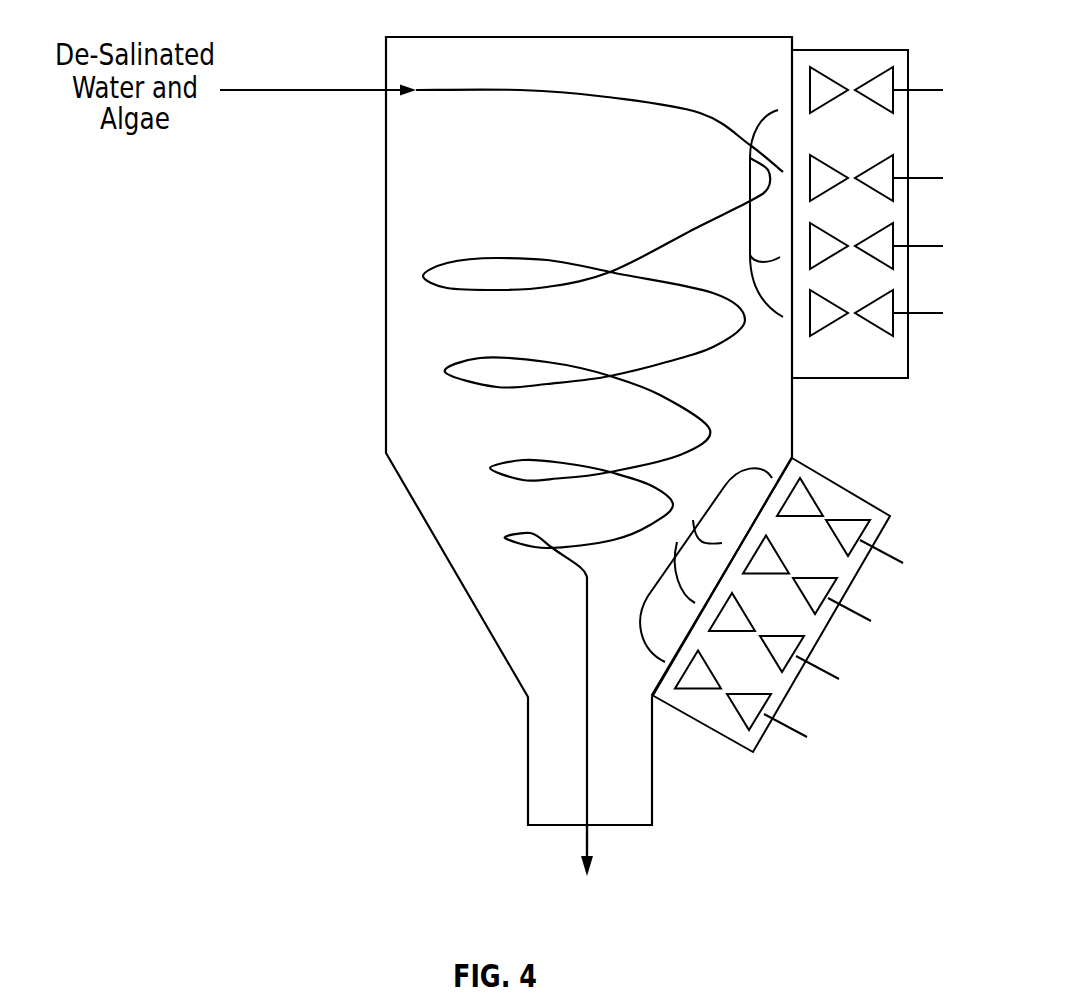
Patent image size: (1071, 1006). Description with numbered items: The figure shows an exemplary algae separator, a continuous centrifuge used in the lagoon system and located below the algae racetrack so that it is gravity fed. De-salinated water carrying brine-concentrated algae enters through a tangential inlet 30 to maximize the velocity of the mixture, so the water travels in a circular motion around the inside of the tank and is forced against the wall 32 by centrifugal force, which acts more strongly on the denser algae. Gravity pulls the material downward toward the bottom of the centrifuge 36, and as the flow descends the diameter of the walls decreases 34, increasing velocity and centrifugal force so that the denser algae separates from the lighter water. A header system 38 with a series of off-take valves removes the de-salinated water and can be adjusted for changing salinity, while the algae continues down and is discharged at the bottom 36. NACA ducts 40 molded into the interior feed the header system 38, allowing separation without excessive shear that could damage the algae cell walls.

The tangential inlet 30 is at (318, 89).
The wall 32 is at (394, 92).
The decreasing-diameter walls 34 is at (482, 627).
The bottom of the centrifuge 36 is at (592, 841).
The header system 38 is at (860, 50).
The NACA ducts 40 is at (748, 188).